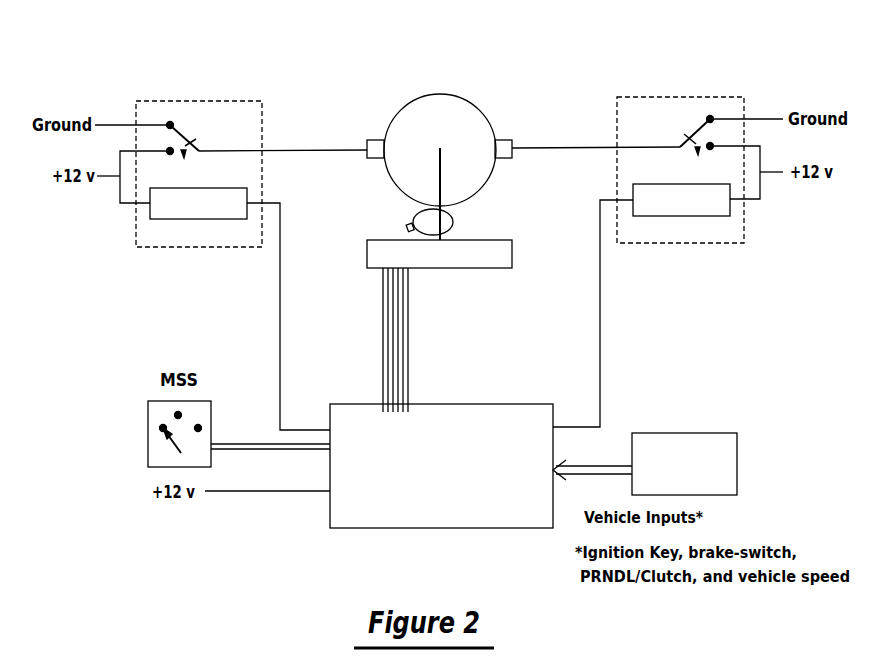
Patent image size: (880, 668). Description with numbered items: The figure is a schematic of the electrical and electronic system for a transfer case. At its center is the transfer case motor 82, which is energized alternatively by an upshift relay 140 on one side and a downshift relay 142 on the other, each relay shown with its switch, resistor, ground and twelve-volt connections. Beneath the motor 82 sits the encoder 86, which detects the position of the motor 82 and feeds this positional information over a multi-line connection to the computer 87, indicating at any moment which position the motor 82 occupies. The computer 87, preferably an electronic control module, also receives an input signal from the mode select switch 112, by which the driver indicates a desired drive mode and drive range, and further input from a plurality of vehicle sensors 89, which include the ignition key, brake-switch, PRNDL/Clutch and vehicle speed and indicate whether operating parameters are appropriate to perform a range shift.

The upshift relay 140 is at (200, 100).
The downshift relay 142 is at (680, 97).
The transfer case motor 82 is at (440, 93).
The encoder 86 is at (512, 252).
The computer 87 is at (431, 483).
The vehicle sensors 89 is at (675, 485).
The mode select switch 112 is at (148, 435).